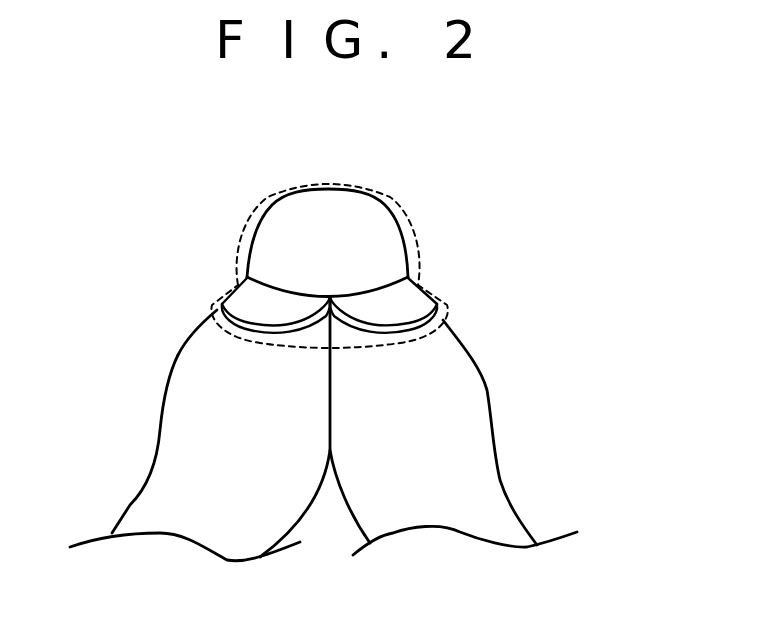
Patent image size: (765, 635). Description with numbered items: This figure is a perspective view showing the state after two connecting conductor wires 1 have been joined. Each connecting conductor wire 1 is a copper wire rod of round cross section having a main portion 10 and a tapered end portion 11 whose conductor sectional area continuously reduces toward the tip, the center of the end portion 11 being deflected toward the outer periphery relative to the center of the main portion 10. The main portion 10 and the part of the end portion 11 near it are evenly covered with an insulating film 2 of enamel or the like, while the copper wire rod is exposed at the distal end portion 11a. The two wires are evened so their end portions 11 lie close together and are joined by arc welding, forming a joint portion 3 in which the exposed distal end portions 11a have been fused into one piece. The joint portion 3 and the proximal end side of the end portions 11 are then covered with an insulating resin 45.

The connecting conductor wire 1 is at (160, 397).
The insulating film 2 is at (205, 348).
The joint portion 3 is at (283, 215).
The main portion 10 is at (562, 518).
The end portion 11 is at (502, 348).
The distal end portion 11a is at (253, 289).
The insulating resin 45 is at (372, 185).